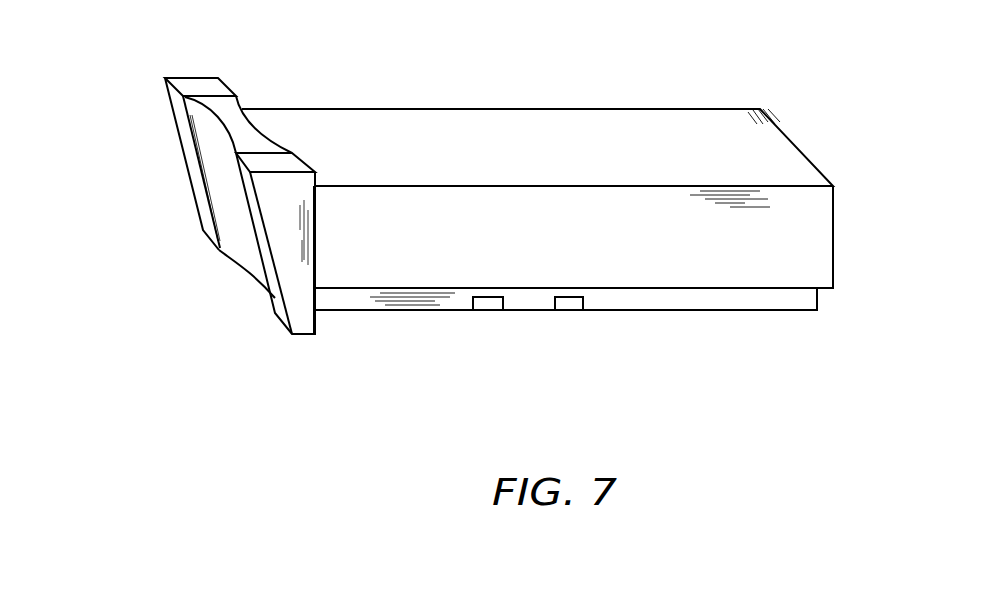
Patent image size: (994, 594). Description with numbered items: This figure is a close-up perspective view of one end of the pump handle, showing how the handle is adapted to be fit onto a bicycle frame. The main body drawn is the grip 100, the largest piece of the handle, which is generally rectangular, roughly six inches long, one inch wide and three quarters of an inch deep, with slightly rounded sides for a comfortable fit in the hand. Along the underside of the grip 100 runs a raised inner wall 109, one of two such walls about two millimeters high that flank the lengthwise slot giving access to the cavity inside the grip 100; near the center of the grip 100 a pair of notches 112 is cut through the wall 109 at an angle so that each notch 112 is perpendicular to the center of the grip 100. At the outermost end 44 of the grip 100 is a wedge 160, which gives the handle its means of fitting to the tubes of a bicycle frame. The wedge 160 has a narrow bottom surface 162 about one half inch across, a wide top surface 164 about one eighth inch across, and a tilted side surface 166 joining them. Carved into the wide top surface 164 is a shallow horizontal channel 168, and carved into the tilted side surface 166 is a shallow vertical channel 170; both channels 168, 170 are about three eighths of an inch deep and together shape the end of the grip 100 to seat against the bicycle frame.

The grip 100 is at (807, 122).
The raised inner wall 109 is at (738, 303).
The notch 112 is at (487, 305).
The outermost end 44 is at (318, 323).
The wedge 160 is at (212, 216).
The narrow bottom surface 162 is at (297, 338).
The wide top surface 164 is at (197, 87).
The tilted side surface 166 is at (203, 188).
The shallow horizontal channel 168 is at (243, 132).
The shallow vertical channel 170 is at (245, 252).